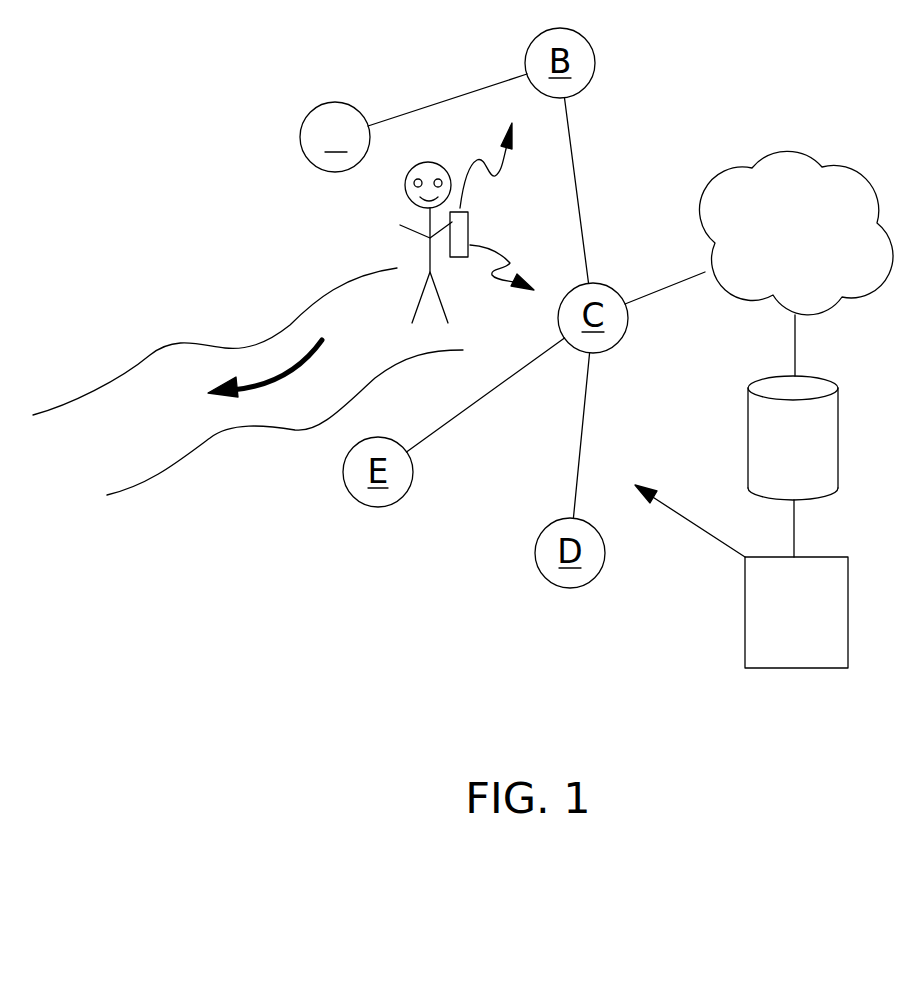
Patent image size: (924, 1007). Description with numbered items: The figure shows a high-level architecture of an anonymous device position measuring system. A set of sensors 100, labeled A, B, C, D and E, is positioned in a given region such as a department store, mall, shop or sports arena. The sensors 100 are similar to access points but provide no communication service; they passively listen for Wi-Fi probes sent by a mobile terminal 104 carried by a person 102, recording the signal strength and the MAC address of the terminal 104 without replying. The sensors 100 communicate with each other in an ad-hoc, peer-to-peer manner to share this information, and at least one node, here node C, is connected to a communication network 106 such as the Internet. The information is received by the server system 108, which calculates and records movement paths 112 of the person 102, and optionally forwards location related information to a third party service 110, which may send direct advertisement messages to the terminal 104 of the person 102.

The sensors 100 is at (320, 110).
The person 102 is at (405, 187).
The mobile terminal 104 is at (468, 220).
The communication network 106 is at (817, 243).
The server system 108 is at (770, 458).
The third party service 110 is at (773, 633).
The movement paths 112 is at (282, 368).